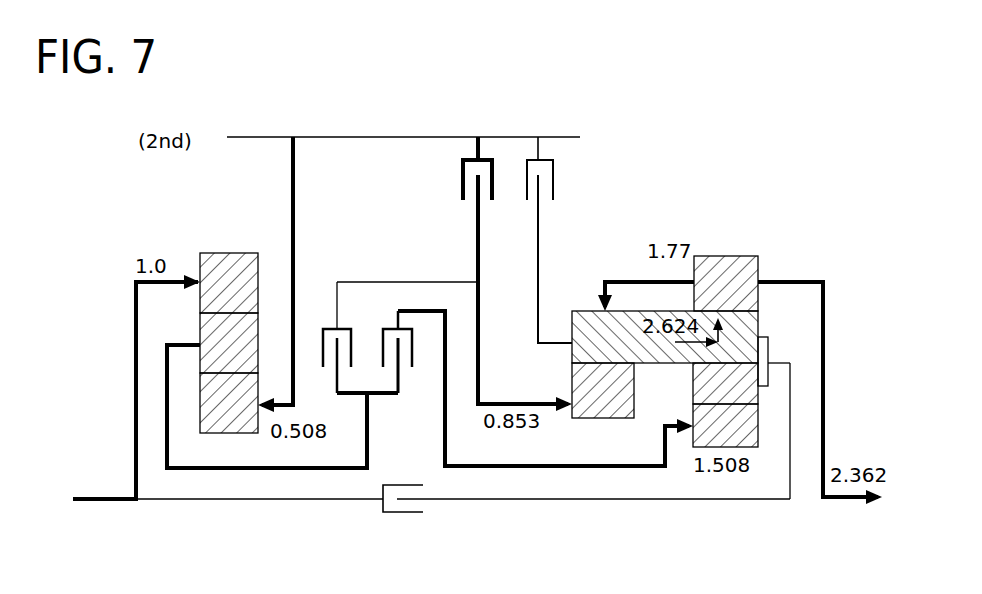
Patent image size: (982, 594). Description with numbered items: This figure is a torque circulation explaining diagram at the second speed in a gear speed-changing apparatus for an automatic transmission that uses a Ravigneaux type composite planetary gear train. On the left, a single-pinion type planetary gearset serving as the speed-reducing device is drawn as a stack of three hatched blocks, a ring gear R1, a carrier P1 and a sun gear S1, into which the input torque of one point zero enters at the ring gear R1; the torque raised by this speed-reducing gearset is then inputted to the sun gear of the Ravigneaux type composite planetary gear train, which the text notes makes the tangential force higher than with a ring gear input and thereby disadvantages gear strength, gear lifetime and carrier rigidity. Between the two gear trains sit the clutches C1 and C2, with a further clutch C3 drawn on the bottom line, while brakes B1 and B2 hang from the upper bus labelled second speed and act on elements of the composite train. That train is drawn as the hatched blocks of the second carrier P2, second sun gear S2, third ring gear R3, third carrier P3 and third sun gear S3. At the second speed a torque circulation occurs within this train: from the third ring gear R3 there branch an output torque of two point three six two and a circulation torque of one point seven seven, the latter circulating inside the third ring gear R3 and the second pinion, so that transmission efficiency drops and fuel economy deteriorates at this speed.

The ring gear of first planetary gear set R1 is at (229, 283).
The carrier of first planetary gear set P1 is at (229, 343).
The sun gear of first planetary gear set S1 is at (229, 403).
The first clutch C1 is at (538, 362).
The second clutch C2 is at (400, 326).
The third clutch C3 is at (403, 486).
The first brake B1 is at (549, 228).
The second brake B2 is at (517, 262).
The third ring gear R3 is at (726, 283).
The carrier of second planetary gear set P2 is at (665, 337).
The sun gear of second planetary gear set S2 is at (603, 390).
The carrier of third planetary gear set P3 is at (725, 383).
The sun gear of third planetary gear set S3 is at (725, 425).